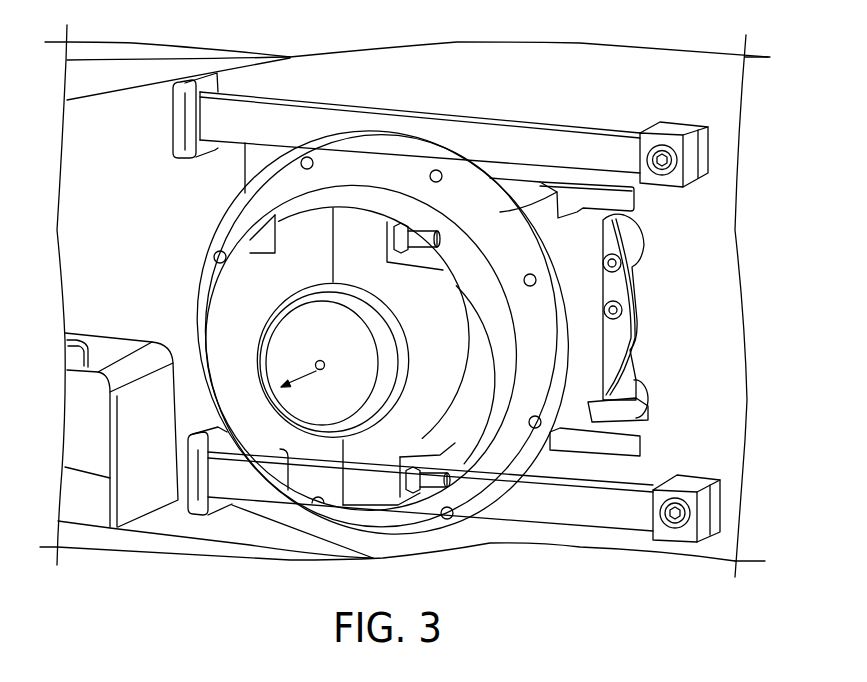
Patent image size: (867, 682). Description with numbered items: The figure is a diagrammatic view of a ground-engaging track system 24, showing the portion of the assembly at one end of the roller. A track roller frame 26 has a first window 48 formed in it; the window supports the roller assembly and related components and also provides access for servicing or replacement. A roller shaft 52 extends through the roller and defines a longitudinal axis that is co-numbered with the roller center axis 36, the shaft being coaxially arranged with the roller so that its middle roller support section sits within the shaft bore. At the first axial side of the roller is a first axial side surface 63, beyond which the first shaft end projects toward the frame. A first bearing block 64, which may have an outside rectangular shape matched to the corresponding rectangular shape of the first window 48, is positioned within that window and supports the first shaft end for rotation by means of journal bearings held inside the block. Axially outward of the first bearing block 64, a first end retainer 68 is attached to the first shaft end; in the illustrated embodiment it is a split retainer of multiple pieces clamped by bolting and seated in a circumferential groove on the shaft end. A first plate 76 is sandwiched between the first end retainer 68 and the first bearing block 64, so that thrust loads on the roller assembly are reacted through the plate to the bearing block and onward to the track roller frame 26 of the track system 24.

The ground-engaging track system 24 is at (766, 138).
The track roller frame 26 is at (455, 63).
The roller center axis 36 is at (298, 378).
The first window 48 is at (636, 338).
The roller shaft 52 is at (377, 330).
The first axial side surface 63 is at (636, 238).
The first bearing block 64 is at (528, 197).
The first end retainer 68 is at (233, 273).
The first plate 76 is at (405, 203).